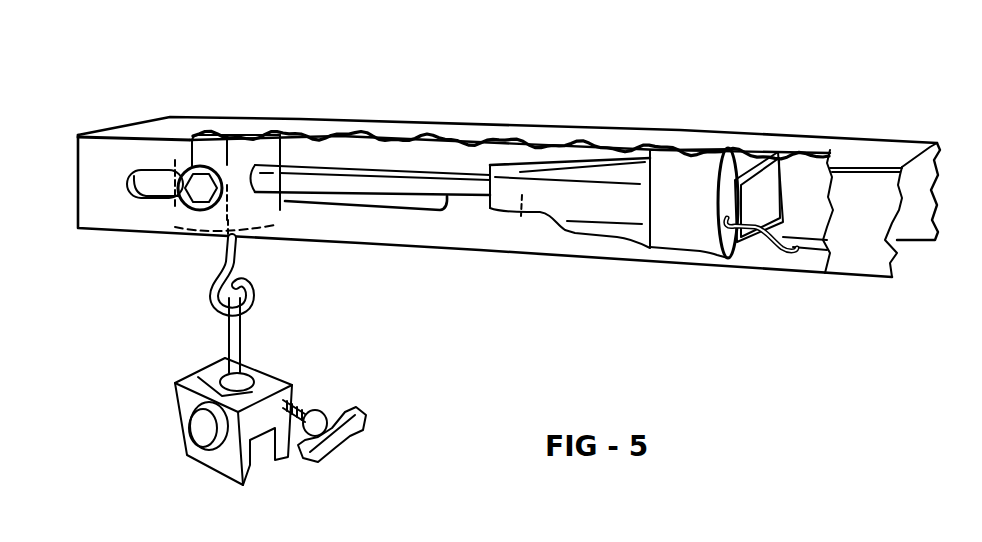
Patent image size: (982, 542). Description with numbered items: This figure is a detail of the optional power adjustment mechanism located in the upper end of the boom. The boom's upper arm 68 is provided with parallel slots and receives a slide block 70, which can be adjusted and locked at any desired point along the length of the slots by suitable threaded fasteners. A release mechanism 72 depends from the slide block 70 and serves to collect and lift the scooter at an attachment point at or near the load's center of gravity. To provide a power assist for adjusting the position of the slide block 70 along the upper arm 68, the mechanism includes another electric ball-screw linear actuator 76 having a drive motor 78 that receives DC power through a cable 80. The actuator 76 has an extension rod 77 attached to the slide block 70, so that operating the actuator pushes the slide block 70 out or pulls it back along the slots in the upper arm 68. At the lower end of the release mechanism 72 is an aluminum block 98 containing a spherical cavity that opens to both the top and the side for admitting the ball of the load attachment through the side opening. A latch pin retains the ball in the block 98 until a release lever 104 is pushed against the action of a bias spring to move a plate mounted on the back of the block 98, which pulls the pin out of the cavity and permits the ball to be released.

The upper arm 68 is at (584, 137).
The slide block 70 is at (247, 152).
The release mechanism 72 is at (166, 353).
The electric ball-screw linear actuator 76 is at (519, 218).
The extension rod 77 is at (370, 185).
The drive motor 78 is at (693, 227).
The cable 80 is at (787, 250).
The aluminum block 98 is at (181, 465).
The release lever 104 is at (360, 437).